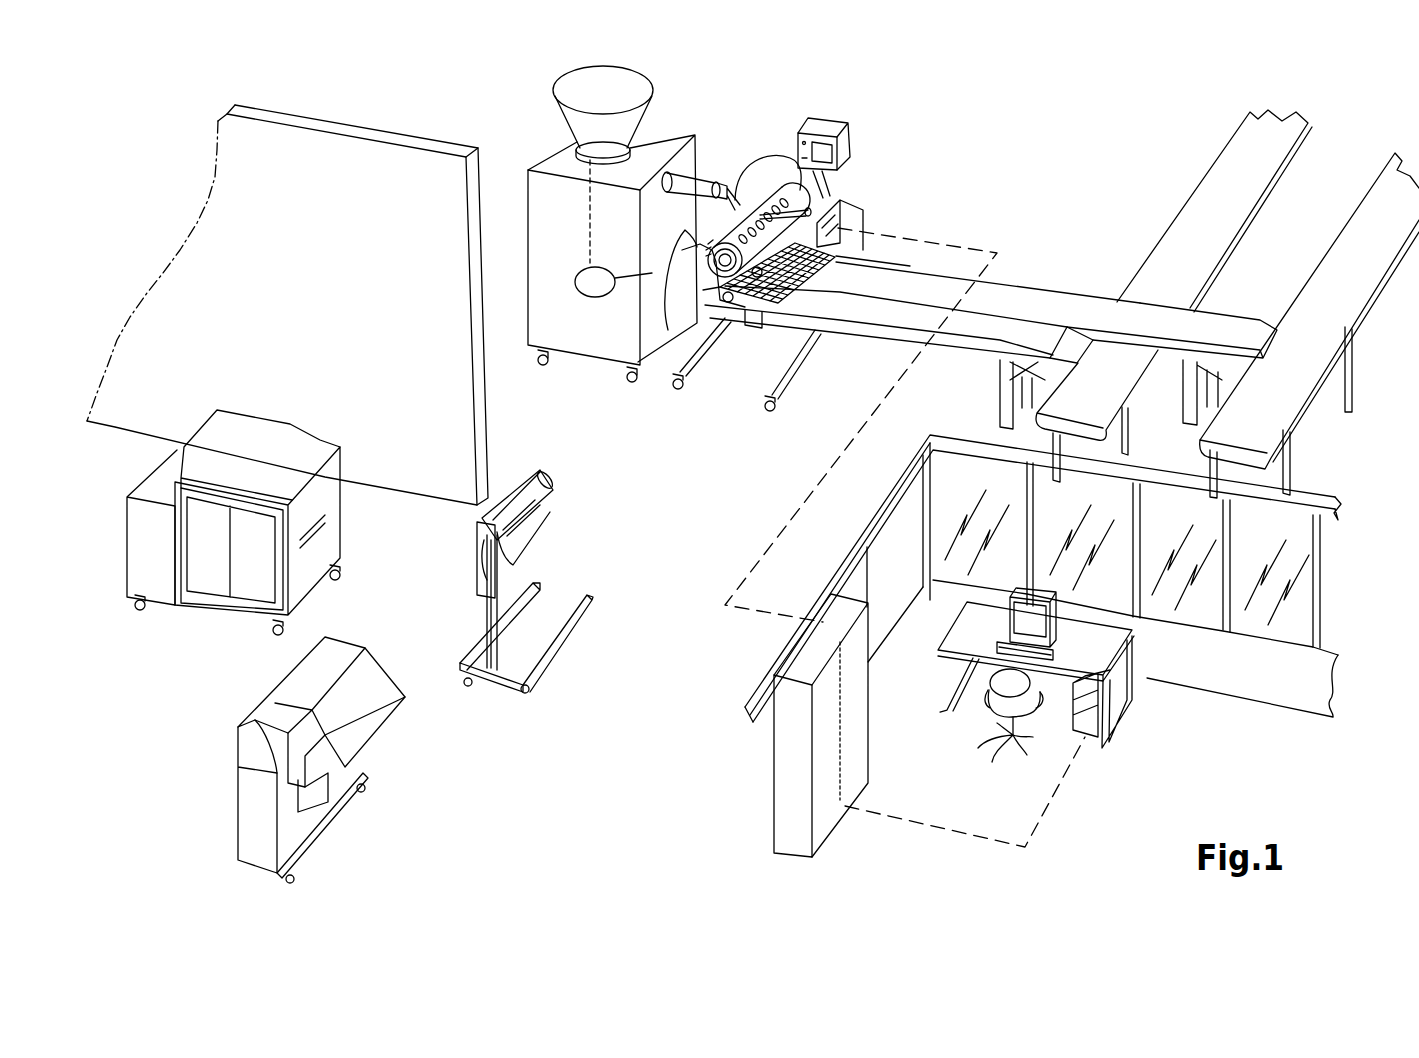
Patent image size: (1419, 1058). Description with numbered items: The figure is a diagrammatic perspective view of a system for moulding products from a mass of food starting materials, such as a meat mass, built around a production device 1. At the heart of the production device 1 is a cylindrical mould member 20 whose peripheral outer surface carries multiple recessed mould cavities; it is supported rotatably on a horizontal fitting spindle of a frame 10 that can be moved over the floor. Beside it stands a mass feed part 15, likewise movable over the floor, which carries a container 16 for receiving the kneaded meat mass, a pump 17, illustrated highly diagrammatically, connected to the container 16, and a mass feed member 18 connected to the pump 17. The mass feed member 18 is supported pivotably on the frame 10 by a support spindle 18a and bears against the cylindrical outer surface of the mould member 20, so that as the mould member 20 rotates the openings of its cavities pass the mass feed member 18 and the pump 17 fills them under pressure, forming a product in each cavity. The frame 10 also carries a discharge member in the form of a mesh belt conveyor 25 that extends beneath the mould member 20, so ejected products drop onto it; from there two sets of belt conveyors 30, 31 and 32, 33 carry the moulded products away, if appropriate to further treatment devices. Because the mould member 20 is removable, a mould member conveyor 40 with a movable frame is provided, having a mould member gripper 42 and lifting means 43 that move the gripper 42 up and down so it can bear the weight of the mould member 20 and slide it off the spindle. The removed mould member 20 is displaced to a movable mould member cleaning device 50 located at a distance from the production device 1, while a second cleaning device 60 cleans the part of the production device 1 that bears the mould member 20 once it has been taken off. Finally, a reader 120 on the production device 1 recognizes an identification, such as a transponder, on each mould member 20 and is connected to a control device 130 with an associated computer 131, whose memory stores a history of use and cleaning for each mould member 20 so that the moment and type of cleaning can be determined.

The production device 1 is at (919, 143).
The frame 10 is at (858, 196).
The mass feed part 15 is at (599, 385).
The container 16 is at (636, 124).
The pump 17 is at (588, 290).
The mass feed member 18 is at (763, 200).
The support spindle 18a is at (668, 258).
The cylindrical mould member 20 is at (787, 178).
The discharge member (belt conveyor) 25 is at (753, 300).
The belt conveyor 30 is at (893, 313).
The belt conveyor 31 is at (1207, 205).
The belt conveyor 32 is at (1053, 301).
The belt conveyor 33 is at (1341, 257).
The mould member conveyor 40 is at (576, 663).
The mould member gripper 42 is at (572, 524).
The lifting means 43 is at (458, 588).
The mould member cleaning device 50 is at (383, 528).
The second cleaning device 60 is at (406, 769).
The reader 120 is at (842, 184).
The control device 130 is at (760, 826).
The computer 131 is at (1091, 761).